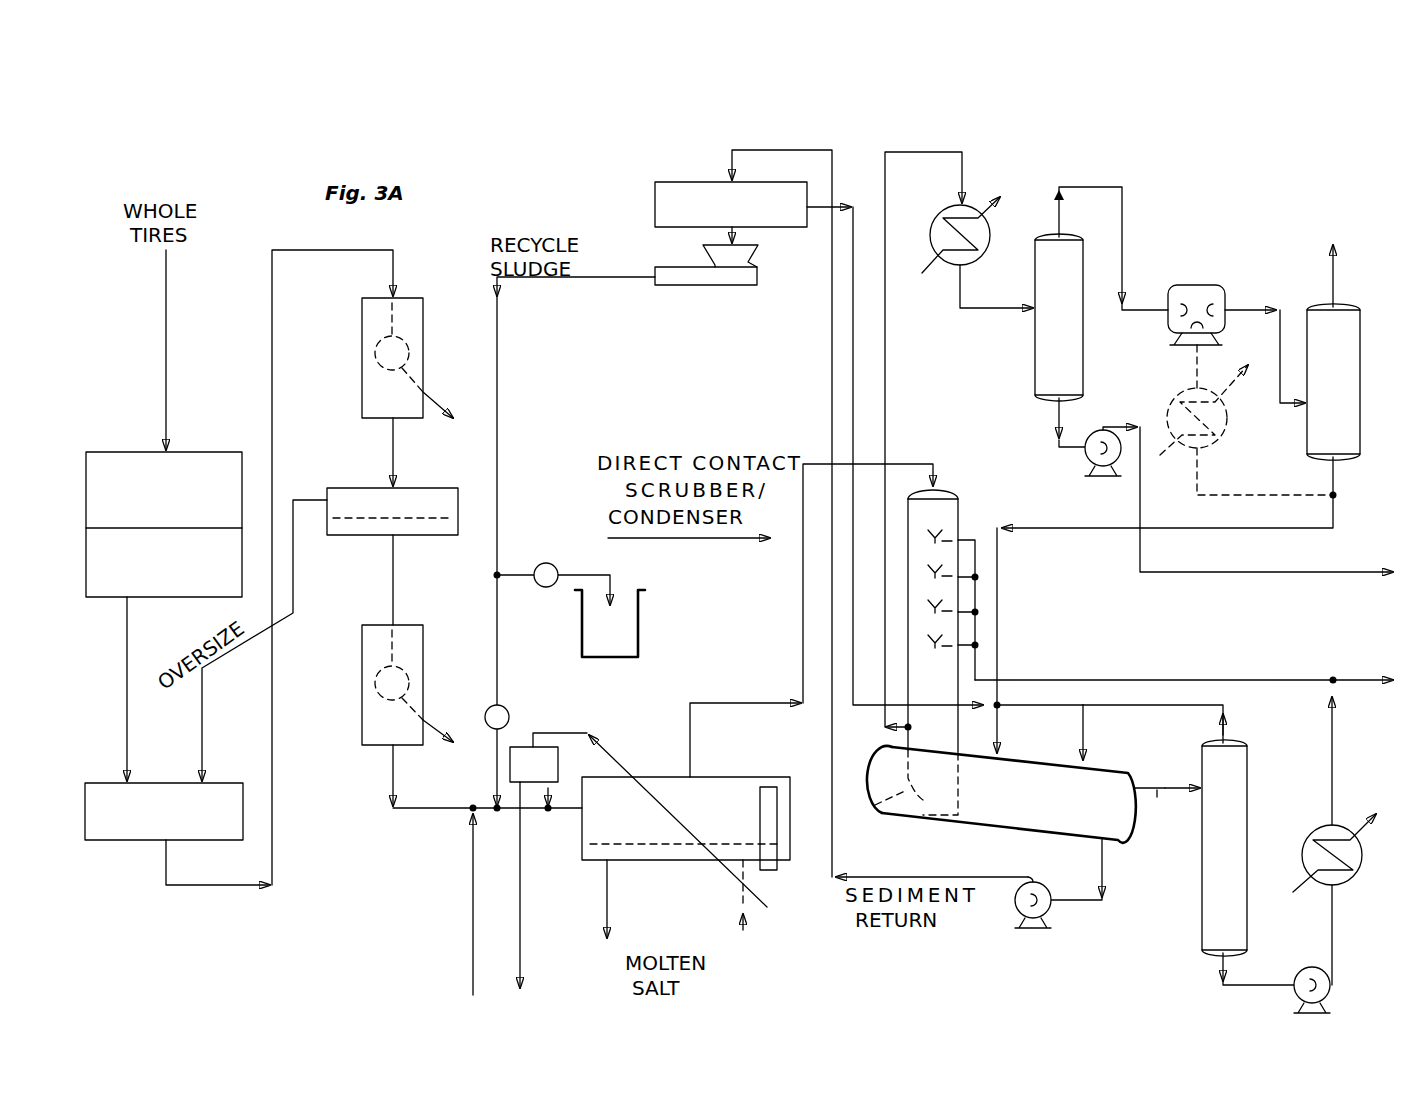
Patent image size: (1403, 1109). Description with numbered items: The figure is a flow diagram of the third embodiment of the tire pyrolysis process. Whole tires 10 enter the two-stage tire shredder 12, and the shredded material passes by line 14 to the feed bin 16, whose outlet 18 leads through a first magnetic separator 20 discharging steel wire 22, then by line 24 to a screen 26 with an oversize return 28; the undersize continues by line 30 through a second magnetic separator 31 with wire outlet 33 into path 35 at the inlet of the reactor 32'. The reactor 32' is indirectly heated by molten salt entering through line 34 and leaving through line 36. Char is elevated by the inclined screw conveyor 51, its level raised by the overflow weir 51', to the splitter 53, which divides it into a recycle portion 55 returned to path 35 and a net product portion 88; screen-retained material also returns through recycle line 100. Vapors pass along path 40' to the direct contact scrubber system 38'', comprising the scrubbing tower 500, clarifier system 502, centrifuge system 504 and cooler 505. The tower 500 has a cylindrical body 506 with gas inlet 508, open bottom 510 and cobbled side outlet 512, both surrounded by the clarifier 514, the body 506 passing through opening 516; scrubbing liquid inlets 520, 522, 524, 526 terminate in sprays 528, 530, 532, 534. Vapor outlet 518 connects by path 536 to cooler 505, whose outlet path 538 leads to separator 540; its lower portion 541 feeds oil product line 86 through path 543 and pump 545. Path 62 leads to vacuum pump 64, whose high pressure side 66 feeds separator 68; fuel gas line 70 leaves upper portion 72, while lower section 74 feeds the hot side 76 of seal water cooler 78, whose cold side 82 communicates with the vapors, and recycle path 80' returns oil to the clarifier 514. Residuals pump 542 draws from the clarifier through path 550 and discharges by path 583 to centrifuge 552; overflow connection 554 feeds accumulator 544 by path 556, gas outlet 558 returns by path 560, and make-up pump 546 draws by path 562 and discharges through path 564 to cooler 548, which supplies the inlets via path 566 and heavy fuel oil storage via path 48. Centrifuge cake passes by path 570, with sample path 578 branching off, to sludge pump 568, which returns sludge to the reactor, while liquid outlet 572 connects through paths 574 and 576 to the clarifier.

The whole tires 10 is at (166, 346).
The tire shredder 12 is at (128, 452).
The chopped tire line 14 is at (127, 624).
The feed bin 16 is at (176, 817).
The disintegrator output line 18 is at (190, 885).
The first magnetic separator 20 is at (423, 313).
The wire output 22 is at (438, 402).
The magnetic separator output line 24 is at (393, 455).
The single deck screen 26 is at (440, 488).
The oversize recycle line 28 is at (202, 712).
The rubber feed line to reactor 30 is at (393, 785).
The second magnetic separator 31 is at (370, 625).
The wire output 33 is at (445, 722).
The path 35 is at (393, 555).
The pyrolysis reaction vessel 32' is at (686, 836).
The molten salt inlet line 34 is at (743, 930).
The molten salt return line 36 is at (607, 915).
The vapor path 40' is at (811, 620).
The inclined screw conveyor 51 is at (668, 847).
The overflow weir 51' is at (782, 853).
The splitter 53 is at (524, 776).
The recycle char stream 55 is at (548, 790).
The net product char stream 88 is at (520, 932).
The recycle line 100 is at (473, 935).
The scrubbing tower 500 is at (912, 486).
The clarifier system 502 is at (975, 834).
The centrifuge system 504 is at (703, 180).
The cooler 505 is at (945, 262).
The cylindrical body 506 is at (960, 505).
The gas flow inlet 508 is at (935, 464).
The open bottom 510 is at (928, 820).
The cobbled side outlet 512 is at (880, 805).
The clarifier 514 is at (1095, 770).
The opening 516 is at (975, 745).
The vapor outlet 518 is at (905, 728).
The scrubbing liquid inlet 520 is at (978, 649).
The scrubbing liquid inlet 522 is at (978, 615).
The scrubbing liquid inlet 524 is at (978, 582).
The scrubbing liquid inlet 526 is at (965, 545).
The scrubber spray 528 is at (925, 641).
The scrubber spray 530 is at (925, 606).
The scrubber spray 532 is at (925, 571).
The scrubber spray 534 is at (925, 536).
The path 536 is at (885, 348).
The path 538 is at (960, 282).
The knock-out drum/separator 540 is at (1035, 382).
The lower portion of oil separator 541 is at (1062, 410).
The path 543 is at (1059, 425).
The pump 545 is at (1085, 465).
The cooler 548 is at (1342, 884).
The path 550 is at (1102, 865).
The continuous centrifuge 552 is at (675, 182).
The overflow connection 554 is at (1135, 786).
The path 556 is at (1161, 808).
The gas outlet connection 558 is at (1223, 740).
The path 560 is at (1080, 705).
The path 562 is at (1215, 962).
The path 564 is at (1332, 930).
The path 566 is at (1115, 680).
The sludge pump 568 is at (672, 285).
The path 570 is at (497, 330).
The liquid discharge outlet 572 is at (808, 200).
The path 574 is at (843, 207).
The path 576 is at (853, 377).
The sample or overflow path 578 is at (517, 575).
The path 583 is at (832, 337).
The direct contact scrubber system 38'' is at (980, 451).
The path 48 is at (1365, 683).
The path 62 is at (1104, 187).
The wet vacuum pump 64 is at (1167, 320).
The high pressure side 66 is at (1227, 300).
The separator or knock-out drum 68 is at (1363, 362).
The fuel gas line 70 is at (1338, 278).
The upper portion of separator 72 is at (1345, 308).
The lower section of separator 74 is at (1336, 462).
The hot side of seal water cooler 76 is at (1207, 448).
The seal water cooler 78 is at (1178, 400).
The recycle path 80' is at (1193, 510).
The cold side of seal water cooler 82 is at (1195, 388).
The oil product line 86 is at (1365, 573).
The residuals pump 542 is at (1050, 882).
The accumulator 544 is at (1248, 760).
The make-up pump 546 is at (1328, 990).